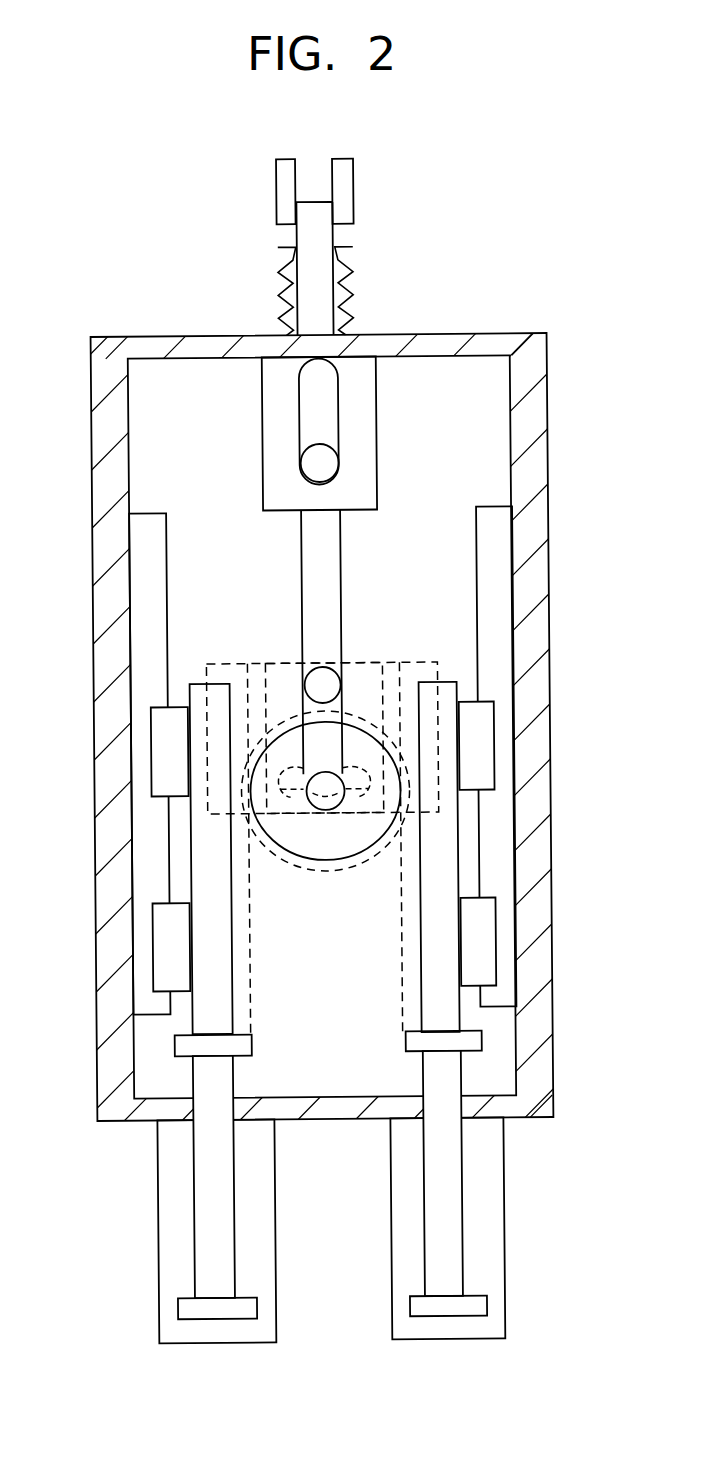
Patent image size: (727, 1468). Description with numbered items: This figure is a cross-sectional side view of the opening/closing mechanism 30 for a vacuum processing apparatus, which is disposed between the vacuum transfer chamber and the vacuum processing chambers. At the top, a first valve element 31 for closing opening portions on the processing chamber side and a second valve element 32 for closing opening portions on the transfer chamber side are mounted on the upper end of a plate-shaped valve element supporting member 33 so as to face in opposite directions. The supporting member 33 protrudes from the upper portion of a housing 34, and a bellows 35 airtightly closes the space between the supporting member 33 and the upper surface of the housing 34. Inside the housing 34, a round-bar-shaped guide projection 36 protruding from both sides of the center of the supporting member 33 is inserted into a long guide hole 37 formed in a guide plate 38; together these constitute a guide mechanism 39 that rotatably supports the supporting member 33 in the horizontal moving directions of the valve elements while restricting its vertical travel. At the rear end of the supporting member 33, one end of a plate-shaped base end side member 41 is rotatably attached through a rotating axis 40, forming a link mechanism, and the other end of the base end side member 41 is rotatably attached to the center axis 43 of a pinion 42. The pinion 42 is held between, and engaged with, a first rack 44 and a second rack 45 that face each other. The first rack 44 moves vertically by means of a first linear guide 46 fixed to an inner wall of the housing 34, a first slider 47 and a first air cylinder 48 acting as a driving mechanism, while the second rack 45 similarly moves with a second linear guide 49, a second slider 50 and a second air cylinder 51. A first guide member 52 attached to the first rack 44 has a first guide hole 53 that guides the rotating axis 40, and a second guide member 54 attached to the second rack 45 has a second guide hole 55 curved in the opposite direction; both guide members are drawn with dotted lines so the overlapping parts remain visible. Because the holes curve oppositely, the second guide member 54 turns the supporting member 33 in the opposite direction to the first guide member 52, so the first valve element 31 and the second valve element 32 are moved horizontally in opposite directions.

The opening/closing mechanism 30 is at (555, 176).
The first valve element 31 is at (281, 174).
The second valve element 32 is at (345, 206).
The valve element supporting member 33 is at (323, 250).
The housing 34 is at (528, 415).
The bellows 35 is at (358, 297).
The guide projection 36 is at (328, 462).
The guide hole 37 is at (323, 373).
The guide plate 38 is at (353, 413).
The guide mechanism 39 is at (201, 436).
The rotating axis 40 is at (325, 680).
The base end side member 41 is at (351, 767).
The pinion 42 is at (308, 832).
The center axis 43 is at (327, 800).
The first rack 44 is at (203, 957).
The second rack 45 is at (440, 955).
The first linear guide 46 is at (148, 835).
The first slider 47 is at (165, 765).
The first air cylinder 48 is at (152, 1180).
The second linear guide 49 is at (503, 833).
The second slider 50 is at (485, 760).
The second air cylinder 51 is at (500, 1172).
The first guide member 52 is at (233, 663).
The first guide hole 53 is at (383, 722).
The second guide member 54 is at (267, 782).
The second guide hole 55 is at (292, 768).